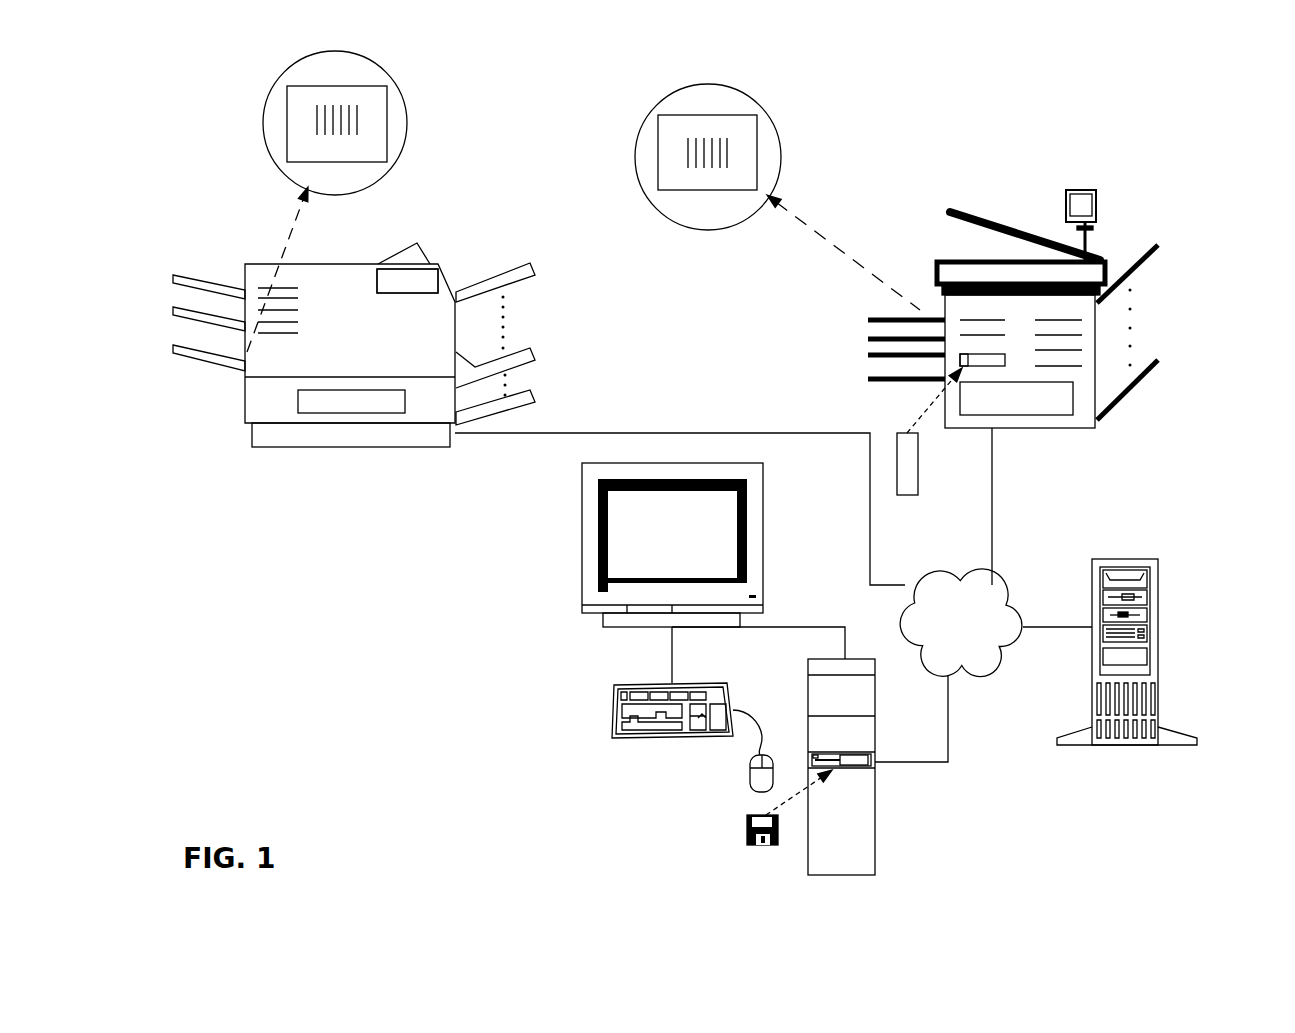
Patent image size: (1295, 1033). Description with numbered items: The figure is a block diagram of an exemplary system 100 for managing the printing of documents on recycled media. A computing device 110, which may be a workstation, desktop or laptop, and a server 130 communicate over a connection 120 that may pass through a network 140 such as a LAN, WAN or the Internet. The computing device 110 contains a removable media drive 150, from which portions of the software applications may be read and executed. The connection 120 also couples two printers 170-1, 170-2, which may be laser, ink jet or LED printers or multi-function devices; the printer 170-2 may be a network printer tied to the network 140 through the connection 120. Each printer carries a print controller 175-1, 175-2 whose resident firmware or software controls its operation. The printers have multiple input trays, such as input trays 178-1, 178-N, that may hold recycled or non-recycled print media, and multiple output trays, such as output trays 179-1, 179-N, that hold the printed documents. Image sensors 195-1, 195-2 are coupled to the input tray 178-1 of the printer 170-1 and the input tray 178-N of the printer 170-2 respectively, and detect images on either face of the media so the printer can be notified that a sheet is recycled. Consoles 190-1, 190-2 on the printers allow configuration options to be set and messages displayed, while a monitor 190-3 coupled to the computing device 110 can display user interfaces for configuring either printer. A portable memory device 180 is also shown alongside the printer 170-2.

The system 100 is at (337, 636).
The computing device 110 is at (863, 767).
The connection 120 is at (773, 586).
The server 130 is at (1127, 637).
The network 140 is at (945, 636).
The removable media drive 150 is at (789, 821).
The printer 170-1 is at (321, 345).
The printer 170-2 is at (937, 267).
The print controller 175-1 is at (351, 401).
The print controller 175-2 is at (1016, 398).
The input tray 178-1 is at (175, 363).
The input tray 178-N is at (175, 272).
The output tray 179-1 is at (860, 358).
The output tray 179-N is at (857, 263).
The portable memory device 180 is at (929, 431).
The console 190-1 is at (1100, 207).
The console 190-2 is at (377, 282).
The monitor 190-3 is at (582, 498).
The image sensor 195-1 is at (352, 201).
The image sensor 195-2 is at (777, 197).